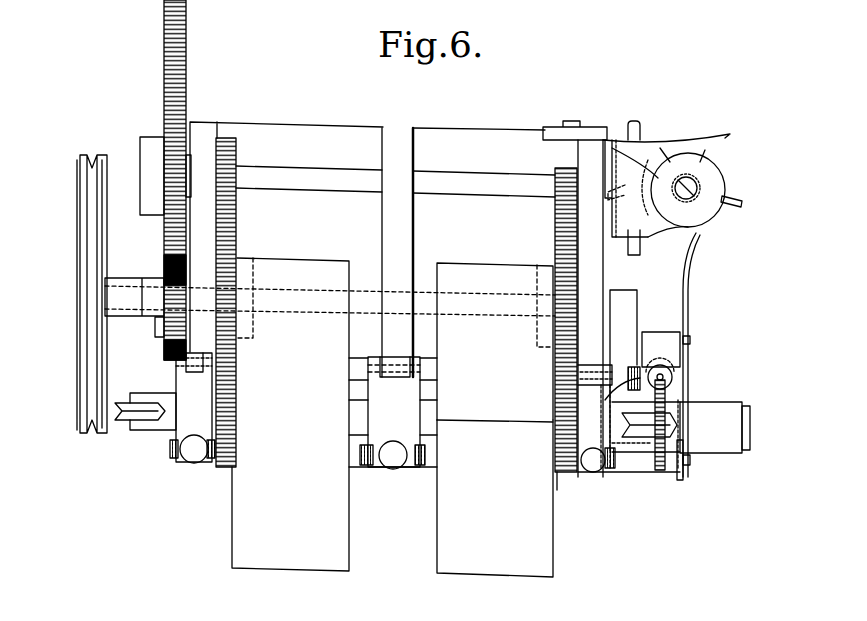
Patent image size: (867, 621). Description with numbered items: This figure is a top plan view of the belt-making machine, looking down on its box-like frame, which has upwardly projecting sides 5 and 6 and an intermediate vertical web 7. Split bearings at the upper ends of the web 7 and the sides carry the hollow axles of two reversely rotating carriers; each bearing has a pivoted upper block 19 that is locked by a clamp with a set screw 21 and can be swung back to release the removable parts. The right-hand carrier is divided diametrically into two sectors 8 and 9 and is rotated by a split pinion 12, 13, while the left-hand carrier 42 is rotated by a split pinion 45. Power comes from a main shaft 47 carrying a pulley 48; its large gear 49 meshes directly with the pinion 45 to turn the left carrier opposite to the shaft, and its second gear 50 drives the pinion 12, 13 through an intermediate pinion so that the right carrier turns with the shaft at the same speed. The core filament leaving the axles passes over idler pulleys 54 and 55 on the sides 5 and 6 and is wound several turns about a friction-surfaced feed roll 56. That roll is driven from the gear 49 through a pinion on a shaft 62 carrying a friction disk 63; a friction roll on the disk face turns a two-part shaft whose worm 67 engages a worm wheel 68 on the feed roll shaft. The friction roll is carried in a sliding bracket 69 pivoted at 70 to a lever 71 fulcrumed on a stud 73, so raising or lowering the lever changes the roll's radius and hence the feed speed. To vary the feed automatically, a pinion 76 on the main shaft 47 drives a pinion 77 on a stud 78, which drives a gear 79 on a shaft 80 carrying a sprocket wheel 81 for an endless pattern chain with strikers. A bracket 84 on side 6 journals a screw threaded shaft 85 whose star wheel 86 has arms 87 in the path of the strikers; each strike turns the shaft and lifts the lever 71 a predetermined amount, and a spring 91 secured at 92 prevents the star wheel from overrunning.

The side 5 is at (197, 120).
The side 6 is at (598, 281).
The intermediate vertical web 7 is at (405, 225).
The carrier sector 8 is at (481, 268).
The carrier sector 9 is at (539, 566).
The pinion sector 12 is at (553, 382).
The pinion sector 13 is at (560, 493).
The bearing block 19 is at (576, 473).
The set screw 21 is at (596, 474).
The carrier 42 is at (307, 557).
The split pinion 45 is at (221, 468).
The main shaft 47 is at (364, 300).
The pulley 48 is at (77, 361).
The large gear 49 is at (236, 159).
The second gear 50 is at (555, 219).
The idler pulley 54 is at (127, 416).
The idler pulley 55 is at (668, 428).
The feed roll 56 is at (724, 404).
The shaft 62 is at (428, 367).
The friction disk 63 is at (630, 306).
The worm 67 is at (672, 381).
The worm wheel 68 is at (661, 471).
The bracket 69 is at (672, 335).
The pivot 70 is at (692, 340).
The lever 71 is at (690, 288).
The stud 73 is at (690, 463).
The pinion 76 is at (164, 266).
The pinion 77 is at (162, 356).
The stud 78 is at (155, 328).
The gear 79 is at (186, 33).
The shaft 80 is at (485, 178).
The sprocket wheel 81 is at (636, 124).
The bracket 84 is at (655, 176).
The screw threaded shaft 85 is at (685, 182).
The star wheel 86 is at (718, 173).
The arms 87 is at (745, 203).
The spring 91 is at (731, 135).
The securing point 92 is at (578, 125).